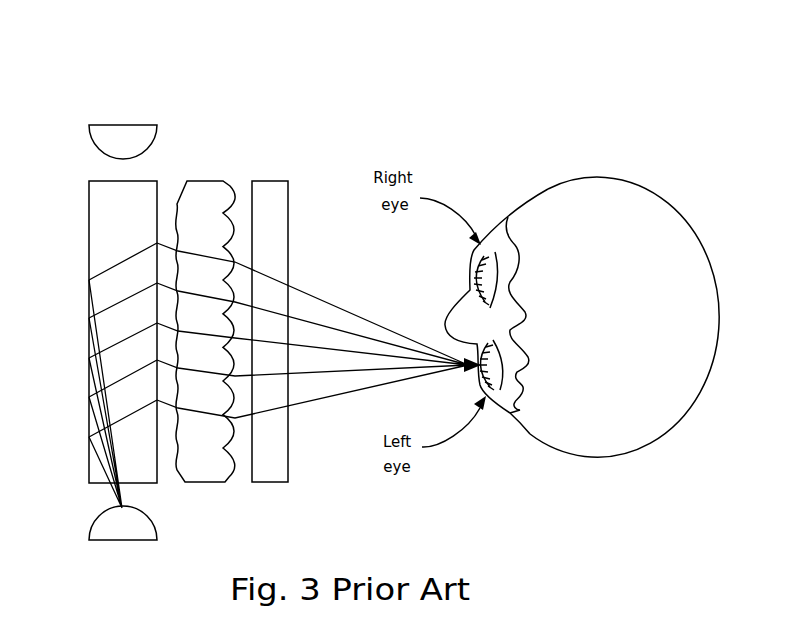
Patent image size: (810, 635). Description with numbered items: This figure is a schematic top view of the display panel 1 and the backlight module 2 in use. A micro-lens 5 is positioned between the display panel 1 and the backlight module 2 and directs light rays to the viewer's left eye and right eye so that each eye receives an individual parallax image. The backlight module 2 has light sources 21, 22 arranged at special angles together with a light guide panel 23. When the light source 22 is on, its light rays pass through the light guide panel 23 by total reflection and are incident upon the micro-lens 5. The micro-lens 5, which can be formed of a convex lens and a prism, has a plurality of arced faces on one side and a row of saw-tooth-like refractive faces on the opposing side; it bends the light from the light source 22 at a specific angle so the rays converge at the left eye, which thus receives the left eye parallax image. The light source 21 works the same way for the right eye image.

The display panel 1 is at (273, 181).
The backlight module 2 is at (155, 91).
The micro-lens 5 is at (203, 181).
The light source 21 is at (89, 140).
The light source 22 is at (89, 530).
The light guide panel 23 is at (89, 200).